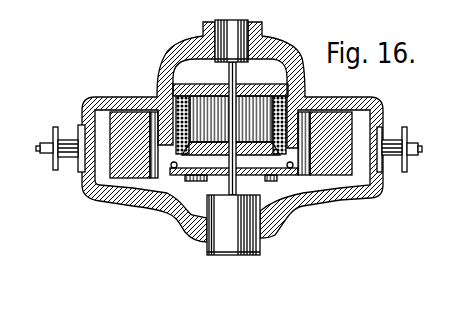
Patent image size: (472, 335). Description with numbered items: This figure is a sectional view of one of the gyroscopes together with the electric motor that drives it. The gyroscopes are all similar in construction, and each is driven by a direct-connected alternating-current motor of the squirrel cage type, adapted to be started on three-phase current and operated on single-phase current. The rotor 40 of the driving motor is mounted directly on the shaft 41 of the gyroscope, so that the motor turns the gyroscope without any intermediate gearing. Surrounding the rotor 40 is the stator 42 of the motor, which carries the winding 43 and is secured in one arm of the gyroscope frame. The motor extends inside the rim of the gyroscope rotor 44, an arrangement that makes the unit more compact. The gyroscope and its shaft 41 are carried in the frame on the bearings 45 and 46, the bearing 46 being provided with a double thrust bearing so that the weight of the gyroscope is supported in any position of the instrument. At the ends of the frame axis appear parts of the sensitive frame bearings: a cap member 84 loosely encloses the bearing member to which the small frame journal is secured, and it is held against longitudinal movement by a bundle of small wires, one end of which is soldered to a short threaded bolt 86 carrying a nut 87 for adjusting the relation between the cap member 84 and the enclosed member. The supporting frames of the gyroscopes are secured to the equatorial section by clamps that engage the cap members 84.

The rotor 40 is at (246, 86).
The shaft 41 is at (237, 187).
The stator 42 is at (307, 93).
The winding 43 is at (306, 72).
The gyroscope rotor 44 is at (353, 117).
The bearing 45 is at (222, 20).
The bearing 46 is at (231, 253).
The cap member 84 is at (408, 166).
The threaded bolt 86 is at (39, 153).
The nut 87 is at (52, 142).